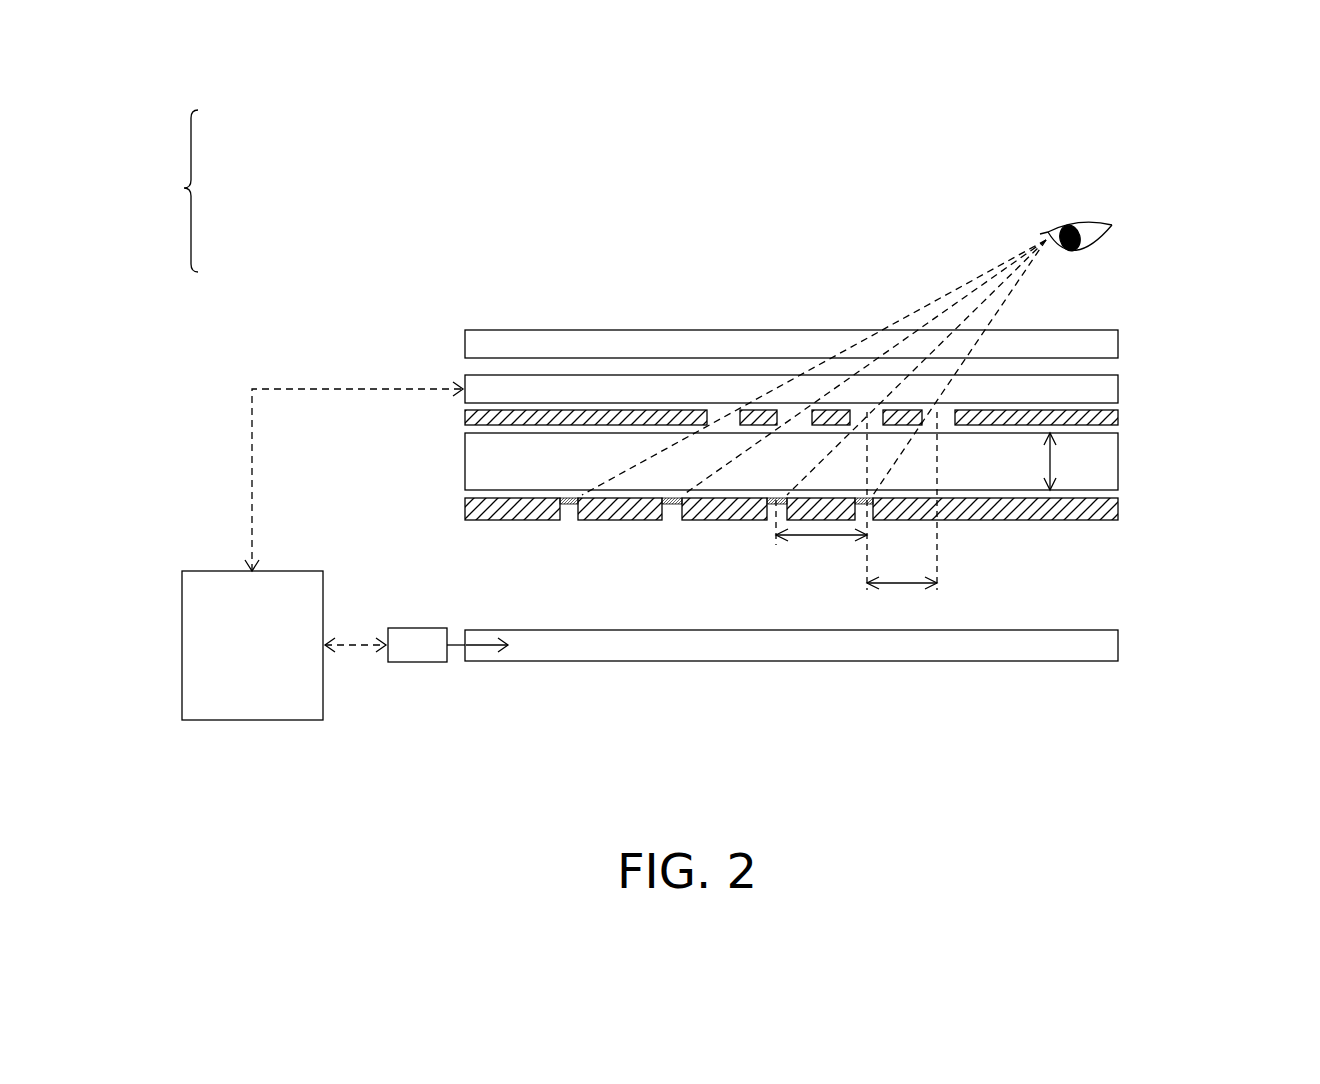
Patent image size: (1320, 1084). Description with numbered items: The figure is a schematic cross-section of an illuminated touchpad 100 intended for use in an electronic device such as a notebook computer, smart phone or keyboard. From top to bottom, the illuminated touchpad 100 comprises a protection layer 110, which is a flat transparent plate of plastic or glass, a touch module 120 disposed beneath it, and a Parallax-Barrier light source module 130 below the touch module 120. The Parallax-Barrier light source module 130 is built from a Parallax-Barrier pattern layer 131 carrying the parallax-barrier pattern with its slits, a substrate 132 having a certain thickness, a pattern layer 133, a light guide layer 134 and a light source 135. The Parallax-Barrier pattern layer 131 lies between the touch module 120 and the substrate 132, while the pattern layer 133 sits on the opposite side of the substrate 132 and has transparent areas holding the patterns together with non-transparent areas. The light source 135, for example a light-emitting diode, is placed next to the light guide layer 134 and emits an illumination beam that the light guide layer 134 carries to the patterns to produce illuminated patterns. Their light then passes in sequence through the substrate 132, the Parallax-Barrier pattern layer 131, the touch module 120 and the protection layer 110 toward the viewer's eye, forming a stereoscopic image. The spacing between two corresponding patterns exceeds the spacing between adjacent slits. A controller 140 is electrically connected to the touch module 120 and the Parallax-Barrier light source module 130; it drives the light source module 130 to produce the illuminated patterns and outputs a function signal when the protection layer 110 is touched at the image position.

The illuminated touchpad 100 is at (1242, 790).
The protection layer 110 is at (1118, 345).
The touch module 120 is at (1118, 388).
The Parallax-Barrier light source module 130 is at (190, 193).
The Parallax-Barrier pattern layer 131 is at (1118, 418).
The substrate 132 is at (1118, 462).
The pattern layer 133 is at (1118, 510).
The light guide layer 134 is at (1118, 648).
The light source 135 is at (420, 662).
The controller 140 is at (252, 720).